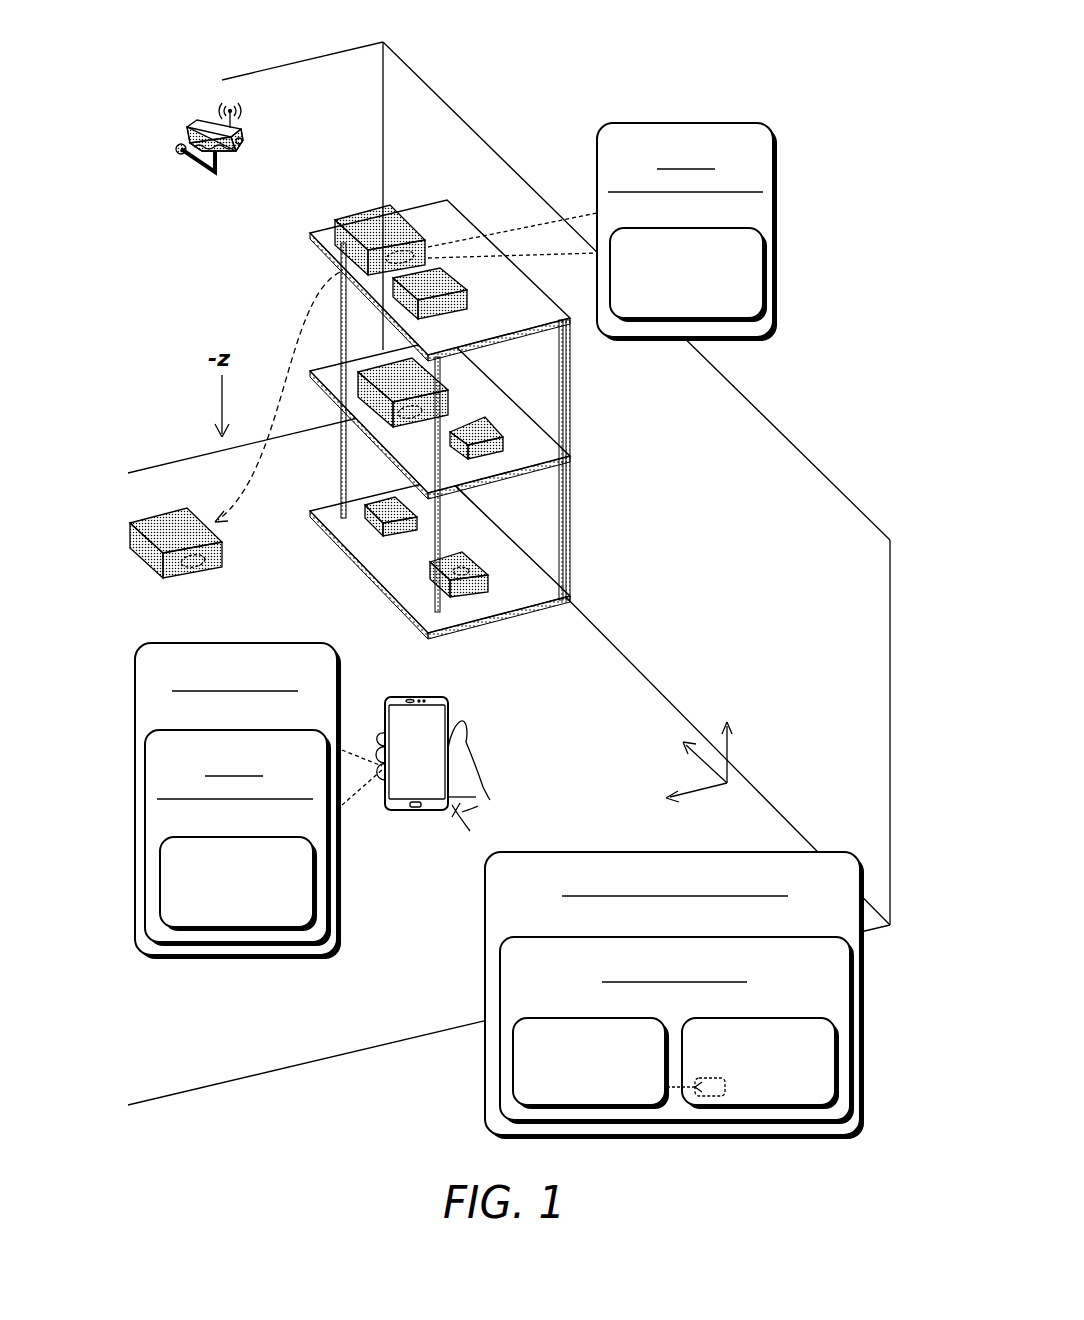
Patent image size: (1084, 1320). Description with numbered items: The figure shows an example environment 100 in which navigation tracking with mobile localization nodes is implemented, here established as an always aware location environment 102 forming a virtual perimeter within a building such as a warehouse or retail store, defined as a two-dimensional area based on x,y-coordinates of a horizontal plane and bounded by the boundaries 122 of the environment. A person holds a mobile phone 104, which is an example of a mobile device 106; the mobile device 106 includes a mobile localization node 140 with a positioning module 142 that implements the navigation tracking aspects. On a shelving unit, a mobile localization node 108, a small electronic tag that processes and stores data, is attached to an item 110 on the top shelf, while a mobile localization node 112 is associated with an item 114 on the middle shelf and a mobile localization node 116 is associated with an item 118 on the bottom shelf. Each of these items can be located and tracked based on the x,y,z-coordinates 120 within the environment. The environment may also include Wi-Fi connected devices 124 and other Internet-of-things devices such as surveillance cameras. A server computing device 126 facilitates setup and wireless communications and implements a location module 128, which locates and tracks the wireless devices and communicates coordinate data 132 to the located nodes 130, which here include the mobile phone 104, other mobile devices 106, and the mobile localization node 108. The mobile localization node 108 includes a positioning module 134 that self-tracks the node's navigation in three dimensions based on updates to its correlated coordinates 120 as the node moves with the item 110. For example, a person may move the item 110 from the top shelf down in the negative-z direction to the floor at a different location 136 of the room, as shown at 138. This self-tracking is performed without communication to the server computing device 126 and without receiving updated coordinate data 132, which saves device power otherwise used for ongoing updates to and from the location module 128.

The example environment 100 is at (560, 82).
The always aware location (AAL) environment 102 is at (600, 658).
The mobile phone 104 is at (401, 835).
The mobile device 106 is at (221, 716).
The mobile localization node 108 is at (671, 217).
The item 110 is at (366, 221).
The mobile localization node 112 is at (403, 418).
The item 114 is at (459, 396).
The mobile localization node 116 is at (463, 575).
The item 118 is at (454, 544).
The x,y,z-coordinates 120 is at (751, 762).
The boundaries 122 is at (310, 1060).
The Wi-Fi connected device 124 is at (229, 192).
The server computing device 126 is at (659, 921).
The location module 128 is at (659, 1006).
The located nodes 130 is at (745, 1096).
The coordinate data 132 is at (575, 1096).
The positioning module 134 is at (671, 306).
The different location 136 is at (134, 607).
The movement of the item 138 is at (268, 330).
The mobile localization node 140 is at (221, 822).
The positioning module 142 is at (221, 912).